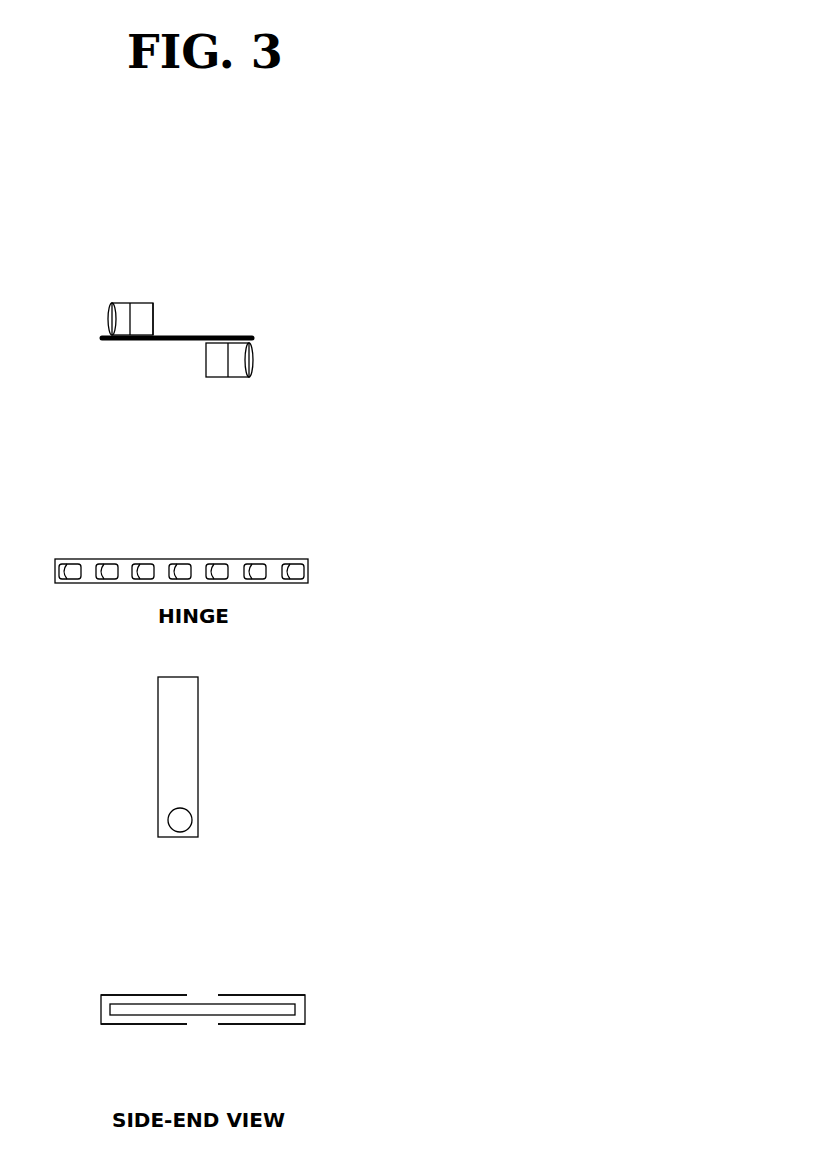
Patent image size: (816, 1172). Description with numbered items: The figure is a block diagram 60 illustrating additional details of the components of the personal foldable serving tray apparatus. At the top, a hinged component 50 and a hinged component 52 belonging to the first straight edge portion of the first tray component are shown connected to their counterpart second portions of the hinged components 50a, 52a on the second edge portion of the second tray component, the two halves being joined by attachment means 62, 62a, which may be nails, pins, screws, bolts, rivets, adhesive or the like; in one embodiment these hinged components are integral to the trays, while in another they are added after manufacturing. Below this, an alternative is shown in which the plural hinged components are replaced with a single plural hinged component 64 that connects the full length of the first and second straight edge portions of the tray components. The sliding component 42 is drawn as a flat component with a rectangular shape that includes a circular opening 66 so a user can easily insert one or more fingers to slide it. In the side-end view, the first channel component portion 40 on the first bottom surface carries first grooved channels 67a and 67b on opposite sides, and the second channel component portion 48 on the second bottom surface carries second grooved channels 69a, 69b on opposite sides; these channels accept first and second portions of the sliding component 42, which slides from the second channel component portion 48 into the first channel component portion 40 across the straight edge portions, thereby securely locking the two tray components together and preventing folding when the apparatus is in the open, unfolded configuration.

The first channel component portion 40 is at (101, 1008).
The sliding component 42 is at (177, 693).
The second channel component portion 48 is at (305, 1010).
The hinged component 50 is at (108, 318).
The second portion of hinged component 50a is at (210, 376).
The hinged component 52 is at (143, 325).
The second portion of hinged component 52a is at (249, 362).
The block diagram 60 is at (484, 143).
The attachment means 62 is at (130, 302).
The attachment means 62a is at (227, 377).
The single plural hinged component 64 is at (182, 558).
The circular opening 66 is at (182, 822).
The first grooved channel 67a is at (143, 1000).
The first grooved channel 67b is at (142, 1018).
The second grooved channel 69a is at (262, 1000).
The second grooved channel 69b is at (265, 1018).